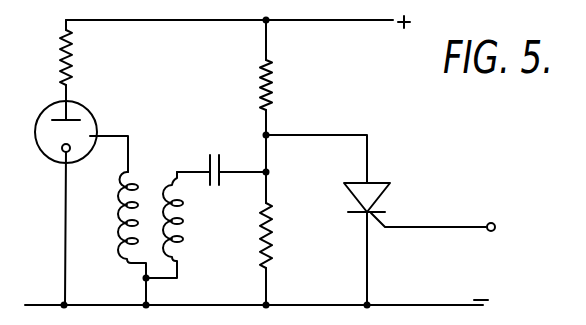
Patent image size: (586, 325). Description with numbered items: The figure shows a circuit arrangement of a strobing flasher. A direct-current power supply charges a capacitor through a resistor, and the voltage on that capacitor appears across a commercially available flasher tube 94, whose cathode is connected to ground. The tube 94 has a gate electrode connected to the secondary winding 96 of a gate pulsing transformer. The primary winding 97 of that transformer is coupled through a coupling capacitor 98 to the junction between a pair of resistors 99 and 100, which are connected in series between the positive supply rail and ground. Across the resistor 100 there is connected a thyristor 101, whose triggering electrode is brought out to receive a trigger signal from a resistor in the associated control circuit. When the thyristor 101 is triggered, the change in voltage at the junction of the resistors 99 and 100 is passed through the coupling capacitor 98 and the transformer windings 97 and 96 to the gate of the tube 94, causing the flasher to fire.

The flasher tube 94 is at (80, 112).
The secondary winding 96 is at (116, 215).
The primary winding 97 is at (183, 237).
The coupling capacitor 98 is at (219, 150).
The resistor 99 is at (273, 86).
The resistor 100 is at (272, 246).
The thyristor 101 is at (373, 197).